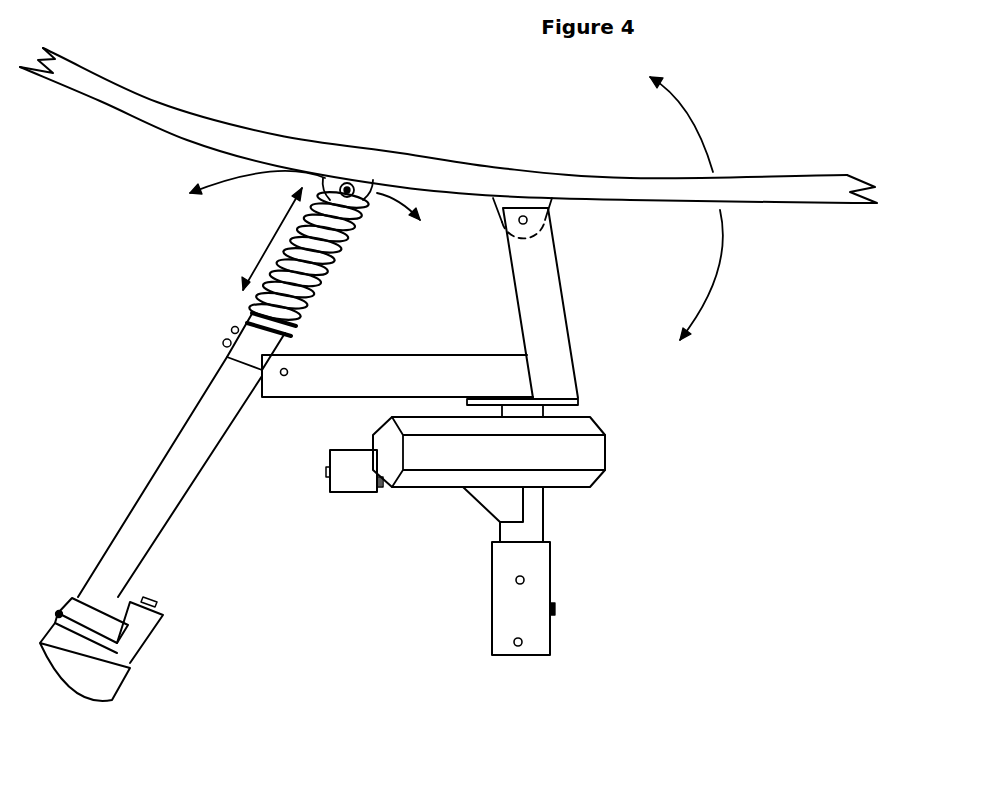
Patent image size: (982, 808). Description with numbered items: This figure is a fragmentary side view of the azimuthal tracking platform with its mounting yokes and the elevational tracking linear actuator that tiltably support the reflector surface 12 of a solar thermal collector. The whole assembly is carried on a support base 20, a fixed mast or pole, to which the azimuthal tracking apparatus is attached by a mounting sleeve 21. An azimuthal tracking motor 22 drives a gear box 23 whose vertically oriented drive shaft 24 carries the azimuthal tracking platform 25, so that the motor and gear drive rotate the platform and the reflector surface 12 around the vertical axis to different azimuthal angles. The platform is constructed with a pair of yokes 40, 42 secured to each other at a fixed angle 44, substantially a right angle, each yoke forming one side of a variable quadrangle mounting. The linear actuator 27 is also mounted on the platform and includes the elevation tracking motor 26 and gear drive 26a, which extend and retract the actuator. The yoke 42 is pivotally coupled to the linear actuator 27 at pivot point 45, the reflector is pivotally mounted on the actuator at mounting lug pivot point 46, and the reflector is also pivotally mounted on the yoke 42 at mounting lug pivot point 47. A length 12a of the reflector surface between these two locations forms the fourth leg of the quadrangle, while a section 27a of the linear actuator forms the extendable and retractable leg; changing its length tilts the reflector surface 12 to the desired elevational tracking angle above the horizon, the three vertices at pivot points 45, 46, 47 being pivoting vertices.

The reflector surface 12 is at (178, 110).
The length of the reflector surface 12a is at (462, 197).
The support base 20 is at (522, 657).
The mounting sleeve 21 is at (550, 632).
The azimuthal tracking motor 22 is at (352, 493).
The gear box 23 is at (605, 450).
The vertical drive shaft 24 is at (548, 417).
The azimuthal tracking platform 25 is at (577, 373).
The elevation tracking motor 26 is at (143, 633).
The gear drive 26a is at (78, 688).
The linear actuator 27 is at (190, 422).
The section of the linear actuator 27a is at (337, 267).
The yoke 40 is at (378, 355).
The yoke 42 is at (563, 293).
The fixed angle 44 is at (523, 327).
The pivot point 45 is at (284, 376).
The mounting lug pivot point 46 is at (347, 184).
The mounting lug pivot point 47 is at (523, 216).